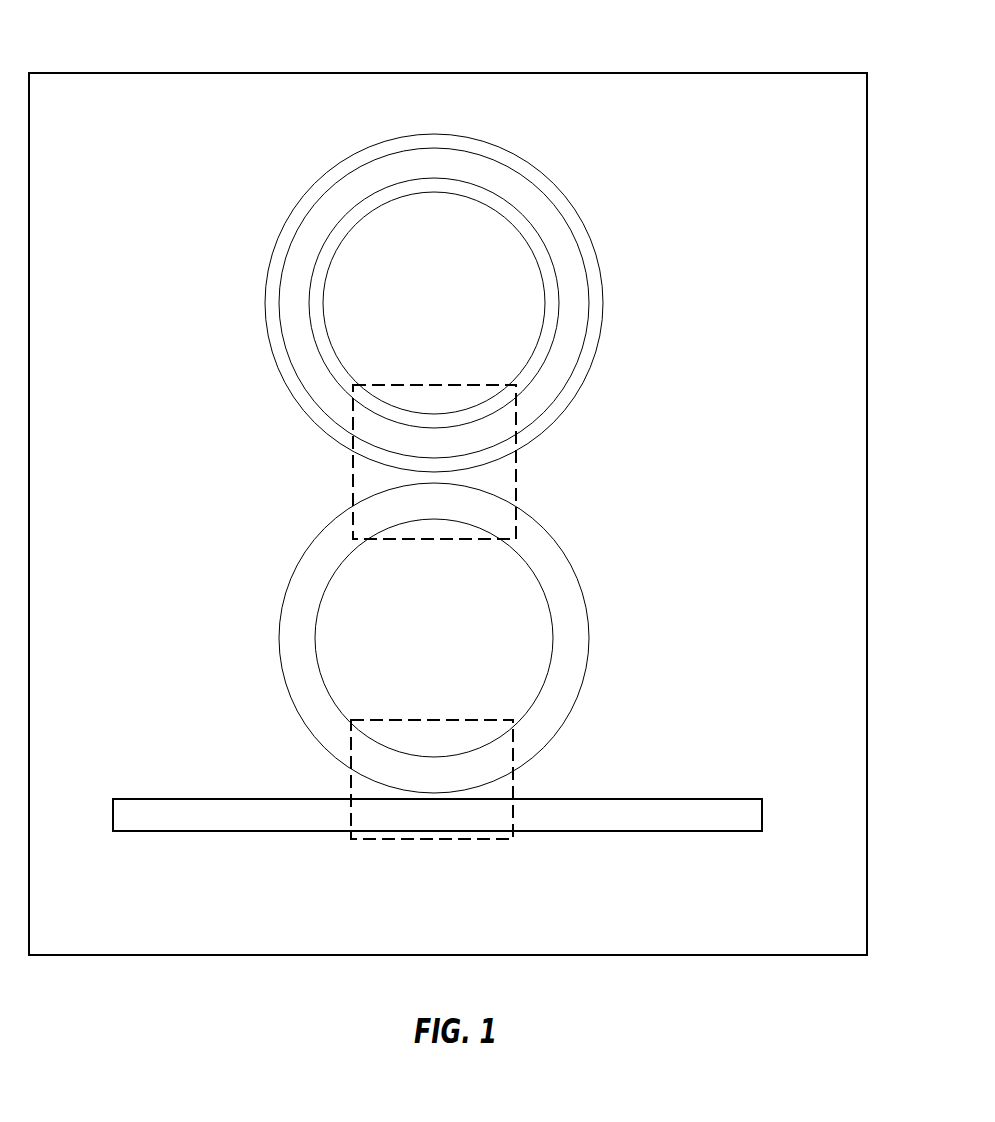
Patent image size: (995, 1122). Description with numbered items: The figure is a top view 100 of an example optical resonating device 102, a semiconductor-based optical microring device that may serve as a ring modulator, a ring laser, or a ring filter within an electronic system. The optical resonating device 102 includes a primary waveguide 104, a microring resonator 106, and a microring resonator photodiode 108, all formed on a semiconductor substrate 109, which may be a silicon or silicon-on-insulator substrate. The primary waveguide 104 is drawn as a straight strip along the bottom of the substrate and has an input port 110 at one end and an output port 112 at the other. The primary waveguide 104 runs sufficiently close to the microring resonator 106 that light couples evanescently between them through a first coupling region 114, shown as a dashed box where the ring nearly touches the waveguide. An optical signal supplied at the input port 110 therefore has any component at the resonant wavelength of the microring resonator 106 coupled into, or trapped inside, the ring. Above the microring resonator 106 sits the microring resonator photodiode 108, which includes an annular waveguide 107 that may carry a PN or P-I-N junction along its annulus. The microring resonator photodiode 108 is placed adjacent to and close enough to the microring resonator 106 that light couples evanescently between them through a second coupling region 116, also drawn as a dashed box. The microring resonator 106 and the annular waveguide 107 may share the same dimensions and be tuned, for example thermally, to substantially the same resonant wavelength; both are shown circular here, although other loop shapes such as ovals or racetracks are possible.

The top view 100 is at (760, 40).
The optical resonating device 102 is at (209, 66).
The primary waveguide 104 is at (587, 831).
The microring resonator 106 is at (589, 634).
The annular waveguide 107 is at (569, 267).
The microring resonator photodiode 108 is at (603, 292).
The semiconductor substrate 109 is at (144, 487).
The input port 110 is at (113, 808).
The output port 112 is at (762, 808).
The first coupling region 114 is at (415, 720).
The second coupling region 116 is at (517, 452).